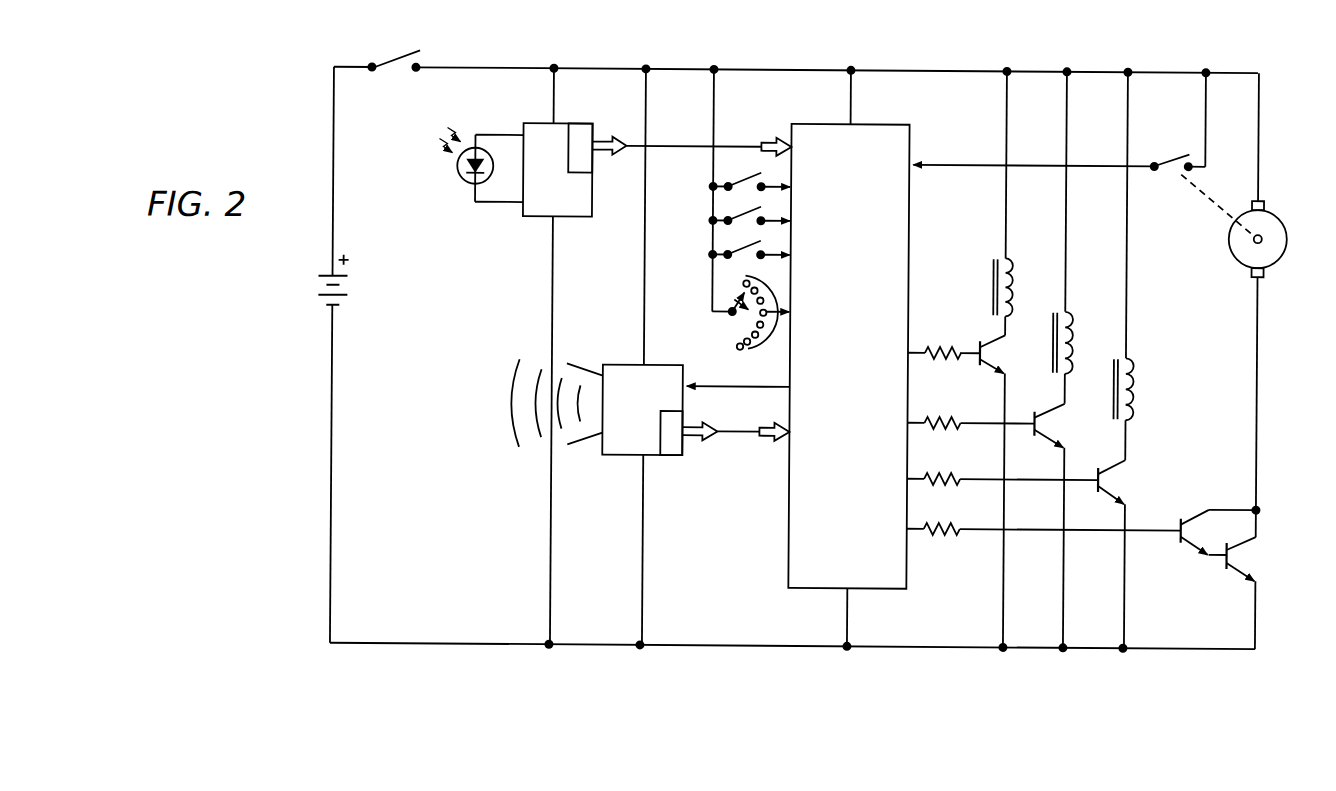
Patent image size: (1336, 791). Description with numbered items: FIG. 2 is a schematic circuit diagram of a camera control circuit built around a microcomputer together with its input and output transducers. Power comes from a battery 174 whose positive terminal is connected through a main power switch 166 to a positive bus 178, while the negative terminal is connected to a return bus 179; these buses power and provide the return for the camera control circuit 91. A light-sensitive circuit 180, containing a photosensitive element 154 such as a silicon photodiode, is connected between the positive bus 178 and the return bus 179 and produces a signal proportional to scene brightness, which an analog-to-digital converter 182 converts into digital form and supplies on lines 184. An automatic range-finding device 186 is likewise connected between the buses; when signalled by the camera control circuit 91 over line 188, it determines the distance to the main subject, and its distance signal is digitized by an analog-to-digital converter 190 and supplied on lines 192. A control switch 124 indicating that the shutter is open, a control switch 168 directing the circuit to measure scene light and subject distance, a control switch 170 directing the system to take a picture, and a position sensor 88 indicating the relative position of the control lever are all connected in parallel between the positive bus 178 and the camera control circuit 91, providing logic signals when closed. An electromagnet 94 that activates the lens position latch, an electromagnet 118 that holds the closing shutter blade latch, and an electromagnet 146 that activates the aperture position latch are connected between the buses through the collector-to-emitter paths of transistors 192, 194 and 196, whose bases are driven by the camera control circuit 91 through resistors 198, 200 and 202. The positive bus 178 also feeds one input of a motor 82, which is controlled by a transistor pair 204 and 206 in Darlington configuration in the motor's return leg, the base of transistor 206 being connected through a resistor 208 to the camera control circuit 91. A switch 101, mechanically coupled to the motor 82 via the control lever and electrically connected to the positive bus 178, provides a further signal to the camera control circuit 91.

The motor 82 is at (1284, 214).
The position sensor 88 is at (734, 320).
The camera control circuit 91 is at (886, 122).
The electromagnet 94 is at (1014, 290).
The switch 101 is at (1166, 142).
The electromagnet 118 is at (1074, 340).
The control switch 124 is at (742, 176).
The electromagnet 146 is at (1135, 394).
The photosensitive element 154 is at (467, 195).
The main power switch 166 is at (390, 37).
The control switch 168 is at (742, 210).
The control switch 170 is at (742, 244).
The battery 174 is at (352, 293).
The positive bus 178 is at (612, 70).
The return bus 179 is at (600, 648).
The light-sensitive circuit 180 is at (543, 122).
The analog-to-digital converter 182 is at (585, 128).
The lines 184 is at (675, 145).
The automatic range-finding device 186 is at (670, 354).
The line 188 is at (738, 386).
The analog-to-digital converter 190 is at (684, 451).
The transistor 192 is at (740, 430).
The transistor 194 is at (1047, 434).
The transistor 196 is at (1110, 490).
The resistor 198 is at (940, 348).
The resistor 200 is at (942, 418).
The resistor 202 is at (942, 474).
The transistor 204 is at (1242, 558).
The transistor 206 is at (1198, 510).
The resistor 208 is at (944, 512).